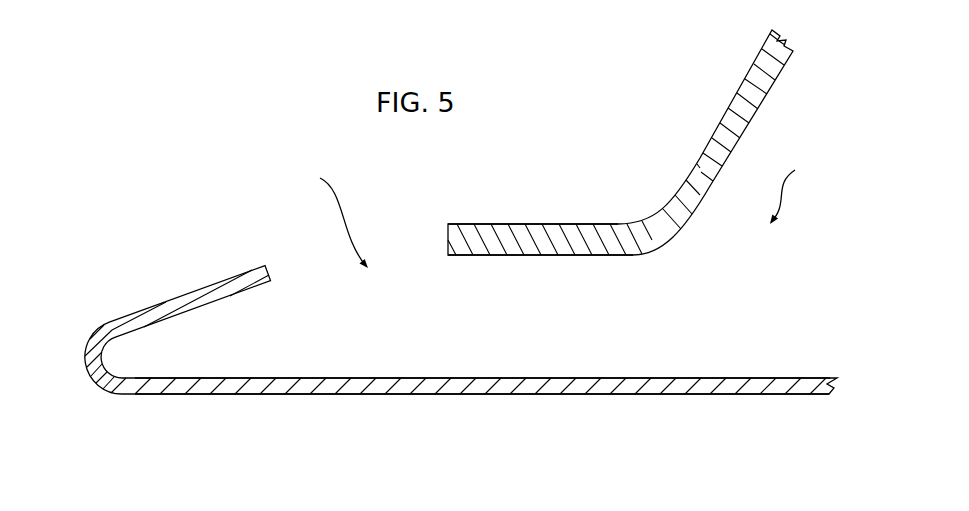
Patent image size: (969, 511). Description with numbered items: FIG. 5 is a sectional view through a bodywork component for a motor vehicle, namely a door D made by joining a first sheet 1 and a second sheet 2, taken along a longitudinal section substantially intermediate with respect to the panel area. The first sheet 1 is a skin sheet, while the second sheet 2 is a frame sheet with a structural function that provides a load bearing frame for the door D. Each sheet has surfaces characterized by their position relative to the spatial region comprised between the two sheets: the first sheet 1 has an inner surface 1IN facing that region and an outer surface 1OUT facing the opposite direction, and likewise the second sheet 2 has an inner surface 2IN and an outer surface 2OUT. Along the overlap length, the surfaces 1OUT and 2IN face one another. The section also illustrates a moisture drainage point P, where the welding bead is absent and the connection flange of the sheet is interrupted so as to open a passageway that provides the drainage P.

The first sheet 1 is at (357, 398).
The inner surface of the first sheet 1IN is at (452, 377).
The outer surface of the first sheet 1OUT is at (502, 396).
The second sheet 2 is at (705, 121).
The outer surface of the second sheet 2OUT is at (535, 221).
The inner surface of the second sheet 2IN is at (587, 254).
The moisture drainage point P is at (338, 213).
The door D is at (792, 191).